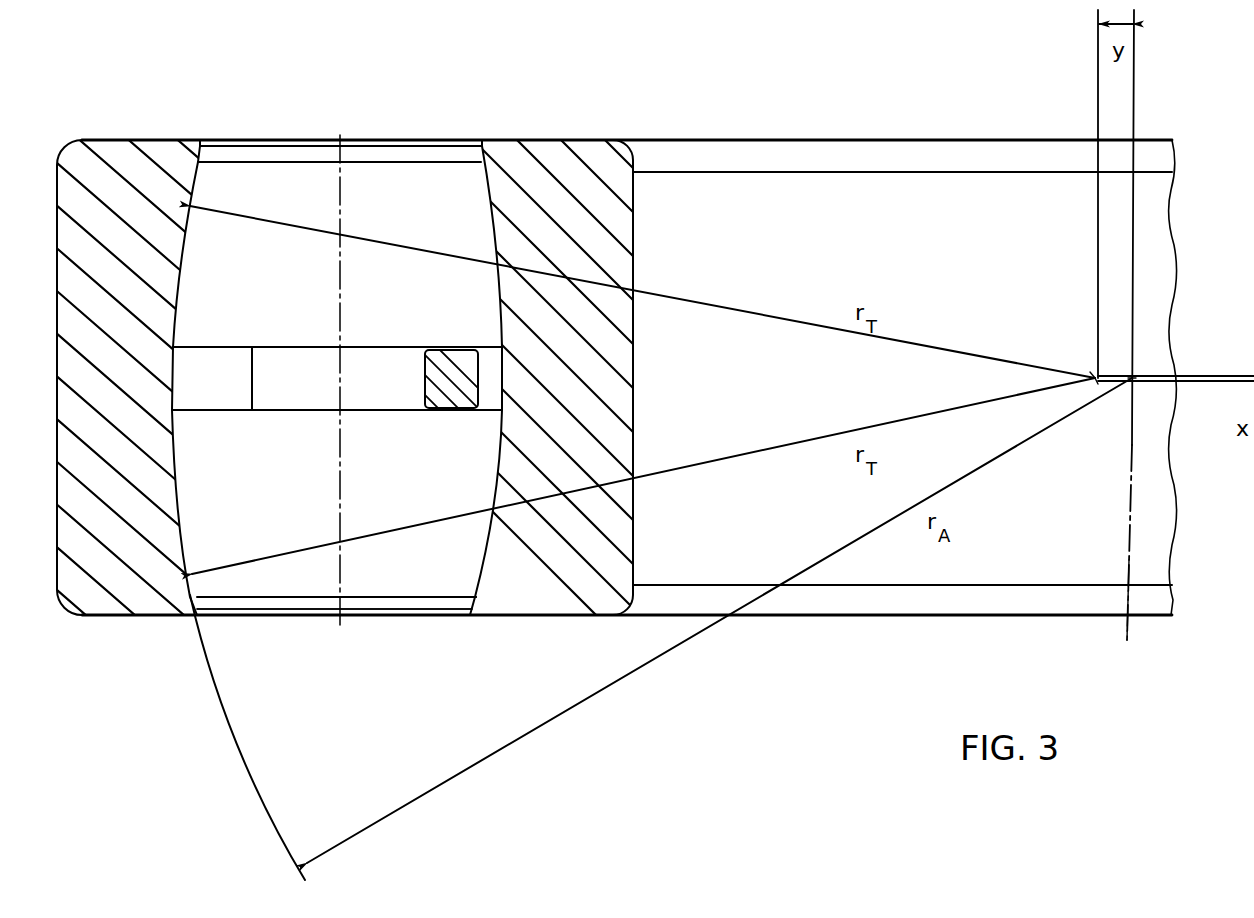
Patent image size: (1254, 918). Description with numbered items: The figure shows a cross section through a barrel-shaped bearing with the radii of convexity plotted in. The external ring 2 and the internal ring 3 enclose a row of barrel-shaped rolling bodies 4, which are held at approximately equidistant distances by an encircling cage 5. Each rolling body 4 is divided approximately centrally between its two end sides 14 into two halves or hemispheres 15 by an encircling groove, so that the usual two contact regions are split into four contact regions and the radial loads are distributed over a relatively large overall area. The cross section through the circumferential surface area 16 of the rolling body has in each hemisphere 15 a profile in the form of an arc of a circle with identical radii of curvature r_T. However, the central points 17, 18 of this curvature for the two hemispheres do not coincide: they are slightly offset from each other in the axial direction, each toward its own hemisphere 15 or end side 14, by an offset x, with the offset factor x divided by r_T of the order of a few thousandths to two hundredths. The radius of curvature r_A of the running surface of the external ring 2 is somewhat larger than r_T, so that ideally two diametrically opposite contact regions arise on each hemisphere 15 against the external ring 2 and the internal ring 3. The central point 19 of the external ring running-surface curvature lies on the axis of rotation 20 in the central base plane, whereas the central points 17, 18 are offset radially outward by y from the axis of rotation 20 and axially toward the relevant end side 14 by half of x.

The external ring 2 is at (140, 160).
The internal ring 3 is at (543, 150).
The barrel-shaped rolling body 4 is at (272, 168).
The cage 5 is at (470, 352).
The end side 14 is at (318, 165).
The hemisphere 15 is at (357, 580).
The circumferential surface area 16 is at (440, 580).
The central point of cross-sectional curvature 17 is at (1092, 375).
The central point of cross-sectional curvature 18 is at (1095, 385).
The central point of cross-sectional curvature of the running surface 19 is at (1135, 376).
The axis of rotation 20 is at (1128, 600).